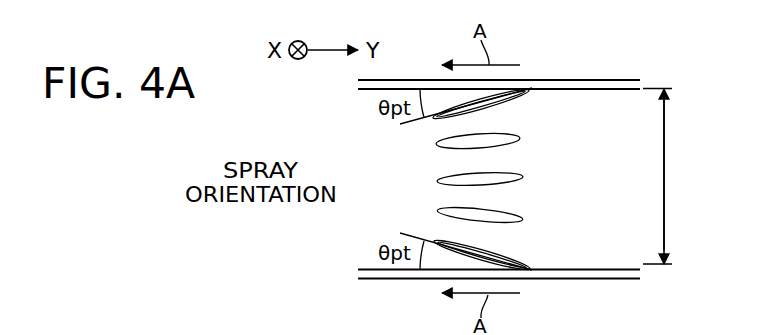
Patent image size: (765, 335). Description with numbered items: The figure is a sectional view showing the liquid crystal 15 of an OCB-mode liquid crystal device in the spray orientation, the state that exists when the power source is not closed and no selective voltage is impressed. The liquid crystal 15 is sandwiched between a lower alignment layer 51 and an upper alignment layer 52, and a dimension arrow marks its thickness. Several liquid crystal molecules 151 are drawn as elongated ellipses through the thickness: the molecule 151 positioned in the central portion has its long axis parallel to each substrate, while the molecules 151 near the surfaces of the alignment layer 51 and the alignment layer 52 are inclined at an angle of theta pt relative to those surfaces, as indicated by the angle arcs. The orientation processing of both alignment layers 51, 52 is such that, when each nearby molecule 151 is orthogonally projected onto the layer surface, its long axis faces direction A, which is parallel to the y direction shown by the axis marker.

The liquid crystal molecule 151 is at (500, 100).
The alignment layer 52 is at (623, 91).
The alignment layer 51 is at (619, 268).
The liquid crystal 15 is at (670, 177).